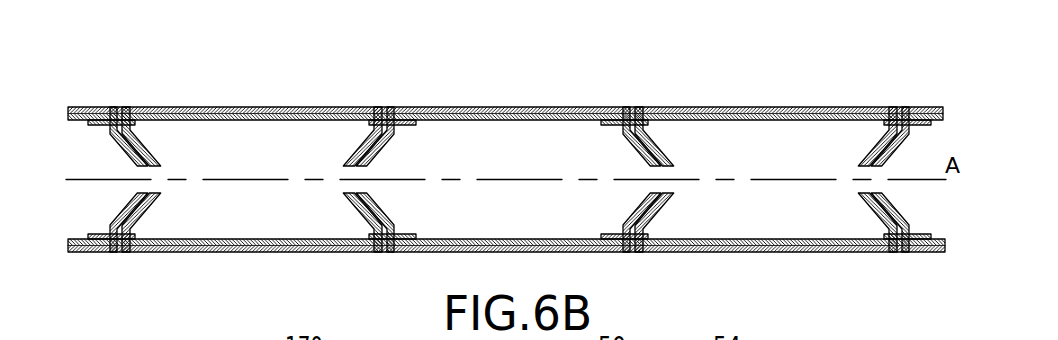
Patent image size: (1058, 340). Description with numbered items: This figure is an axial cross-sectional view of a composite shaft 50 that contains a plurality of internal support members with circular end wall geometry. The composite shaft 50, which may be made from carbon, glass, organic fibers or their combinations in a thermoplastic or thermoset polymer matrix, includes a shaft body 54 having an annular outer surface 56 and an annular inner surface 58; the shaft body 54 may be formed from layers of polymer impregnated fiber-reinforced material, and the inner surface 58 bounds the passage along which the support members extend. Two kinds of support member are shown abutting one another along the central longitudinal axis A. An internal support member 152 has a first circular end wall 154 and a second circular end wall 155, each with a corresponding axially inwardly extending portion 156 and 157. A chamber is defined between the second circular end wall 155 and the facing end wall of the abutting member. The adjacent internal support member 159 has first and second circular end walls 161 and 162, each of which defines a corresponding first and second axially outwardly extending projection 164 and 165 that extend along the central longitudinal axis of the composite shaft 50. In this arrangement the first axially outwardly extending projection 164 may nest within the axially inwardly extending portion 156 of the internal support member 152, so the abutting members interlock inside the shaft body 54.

The composite shaft 50 is at (602, 88).
The shaft body 54 is at (742, 107).
The annular outer surface 56 is at (898, 107).
The annular inner surface 58 is at (942, 228).
The internal support member 152 is at (297, 136).
The first circular end wall 154 is at (166, 138).
The second circular end wall 155 is at (360, 130).
The axially inwardly extending portion 156 is at (158, 208).
The axially inwardly extending portion 157 is at (363, 230).
The internal support member 159 is at (571, 232).
The first circular end wall 161 is at (384, 207).
The second circular end wall 162 is at (667, 140).
The first axially outwardly extending projection 164 is at (393, 146).
The second axially outwardly extending projection 165 is at (648, 213).